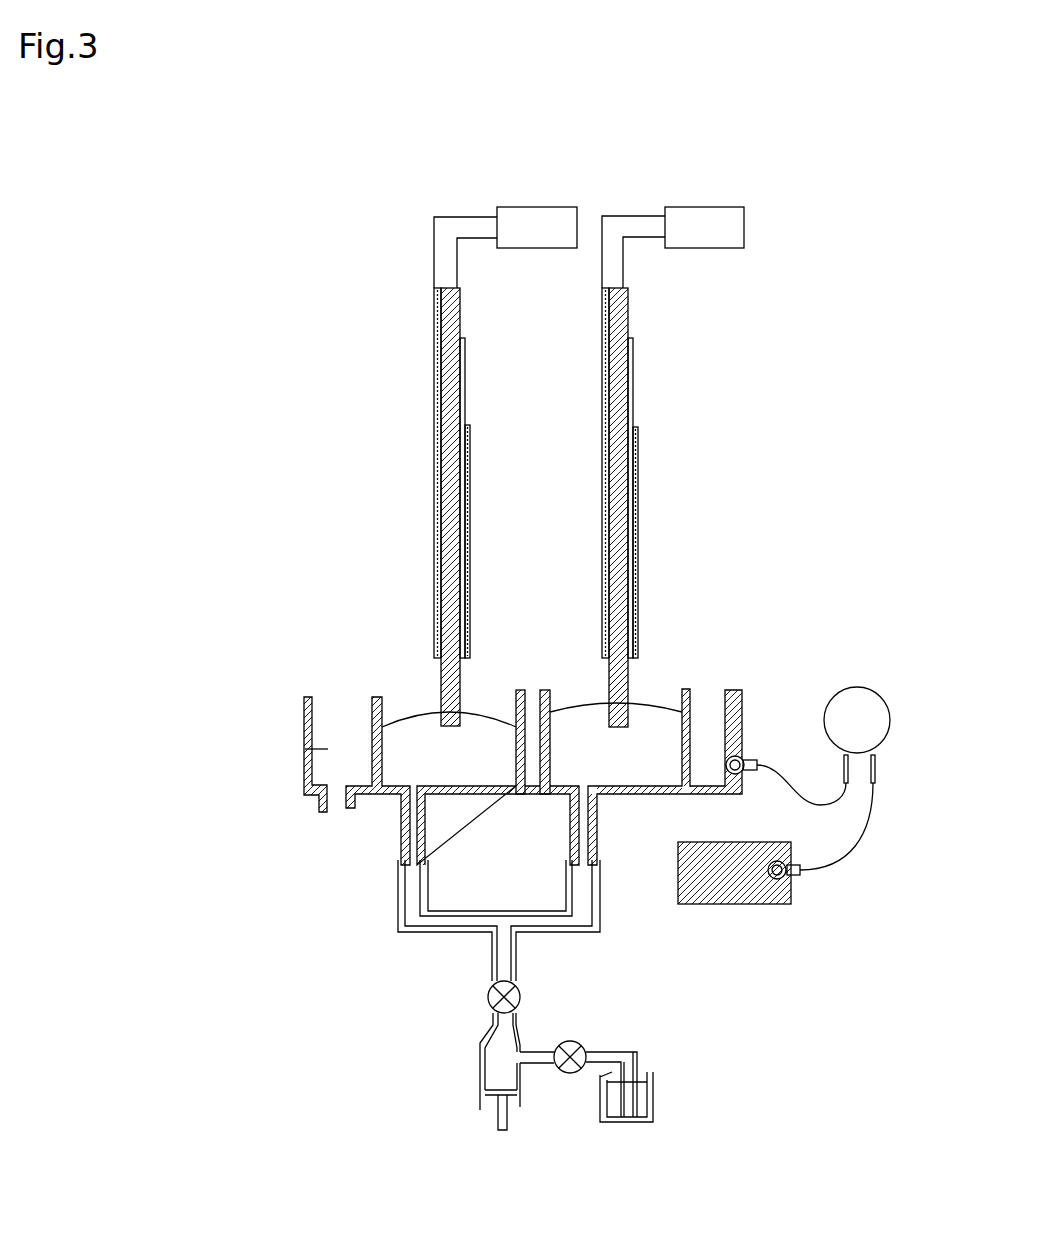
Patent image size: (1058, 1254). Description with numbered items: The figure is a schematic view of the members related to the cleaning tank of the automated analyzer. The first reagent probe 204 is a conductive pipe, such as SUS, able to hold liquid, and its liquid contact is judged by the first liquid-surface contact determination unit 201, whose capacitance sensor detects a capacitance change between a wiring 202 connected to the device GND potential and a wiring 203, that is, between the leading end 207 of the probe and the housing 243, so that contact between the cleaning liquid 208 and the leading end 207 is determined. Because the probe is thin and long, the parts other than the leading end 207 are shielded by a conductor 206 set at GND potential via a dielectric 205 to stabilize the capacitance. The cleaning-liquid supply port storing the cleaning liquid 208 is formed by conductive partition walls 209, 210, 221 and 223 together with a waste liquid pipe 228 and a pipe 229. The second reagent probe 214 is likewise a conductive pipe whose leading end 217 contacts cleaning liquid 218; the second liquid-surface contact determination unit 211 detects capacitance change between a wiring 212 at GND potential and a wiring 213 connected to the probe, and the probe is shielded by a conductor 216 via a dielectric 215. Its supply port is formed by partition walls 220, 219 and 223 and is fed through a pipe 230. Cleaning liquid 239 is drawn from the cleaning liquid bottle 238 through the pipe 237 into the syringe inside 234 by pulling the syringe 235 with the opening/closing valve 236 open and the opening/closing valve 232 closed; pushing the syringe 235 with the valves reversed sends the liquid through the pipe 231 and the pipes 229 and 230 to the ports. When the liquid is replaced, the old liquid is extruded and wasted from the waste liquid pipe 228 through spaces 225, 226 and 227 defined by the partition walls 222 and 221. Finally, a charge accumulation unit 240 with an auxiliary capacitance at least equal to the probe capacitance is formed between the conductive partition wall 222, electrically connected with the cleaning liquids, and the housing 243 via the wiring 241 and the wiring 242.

The first liquid-surface contact determination unit 201 is at (521, 248).
The wiring 202 is at (440, 213).
The wiring 203 is at (456, 268).
The first reagent probe 204 is at (452, 310).
The dielectric 205 is at (465, 387).
The conductor 206 is at (467, 460).
The leading end 207 is at (457, 700).
The cleaning liquid 208 is at (435, 742).
The partition wall 209 is at (377, 697).
The partition wall 210 is at (523, 692).
The second liquid-surface contact determination unit 211 is at (716, 248).
The wiring 212 is at (617, 217).
The wiring 213 is at (645, 240).
The second reagent probe 214 is at (620, 310).
The dielectric 215 is at (633, 387).
The conductor 216 is at (635, 460).
The leading end 217 is at (618, 675).
The cleaning liquid 218 is at (646, 720).
The partition wall 219 is at (690, 687).
The partition wall 220 is at (553, 690).
The partition wall 221 is at (305, 718).
The partition wall 222 is at (741, 715).
The partition wall 223 is at (466, 797).
The space 225 is at (300, 749).
The space 226 is at (533, 797).
The space 227 is at (707, 750).
The waste liquid pipe 228 is at (336, 806).
The pipe 229 is at (400, 845).
The pipe 230 is at (597, 830).
The pipe 231 is at (400, 898).
The opening/closing valve 232 is at (488, 987).
The syringe inside 234 is at (497, 1062).
The syringe 235 is at (492, 1112).
The opening/closing valve 236 is at (578, 1040).
The pipe 237 is at (637, 1050).
The cleaning liquid bottle 238 is at (650, 1119).
The cleaning liquid 239 is at (640, 1098).
The charge accumulation unit 240 is at (860, 710).
The wiring 241 is at (782, 770).
The wiring 242 is at (840, 868).
The housing 243 is at (715, 875).